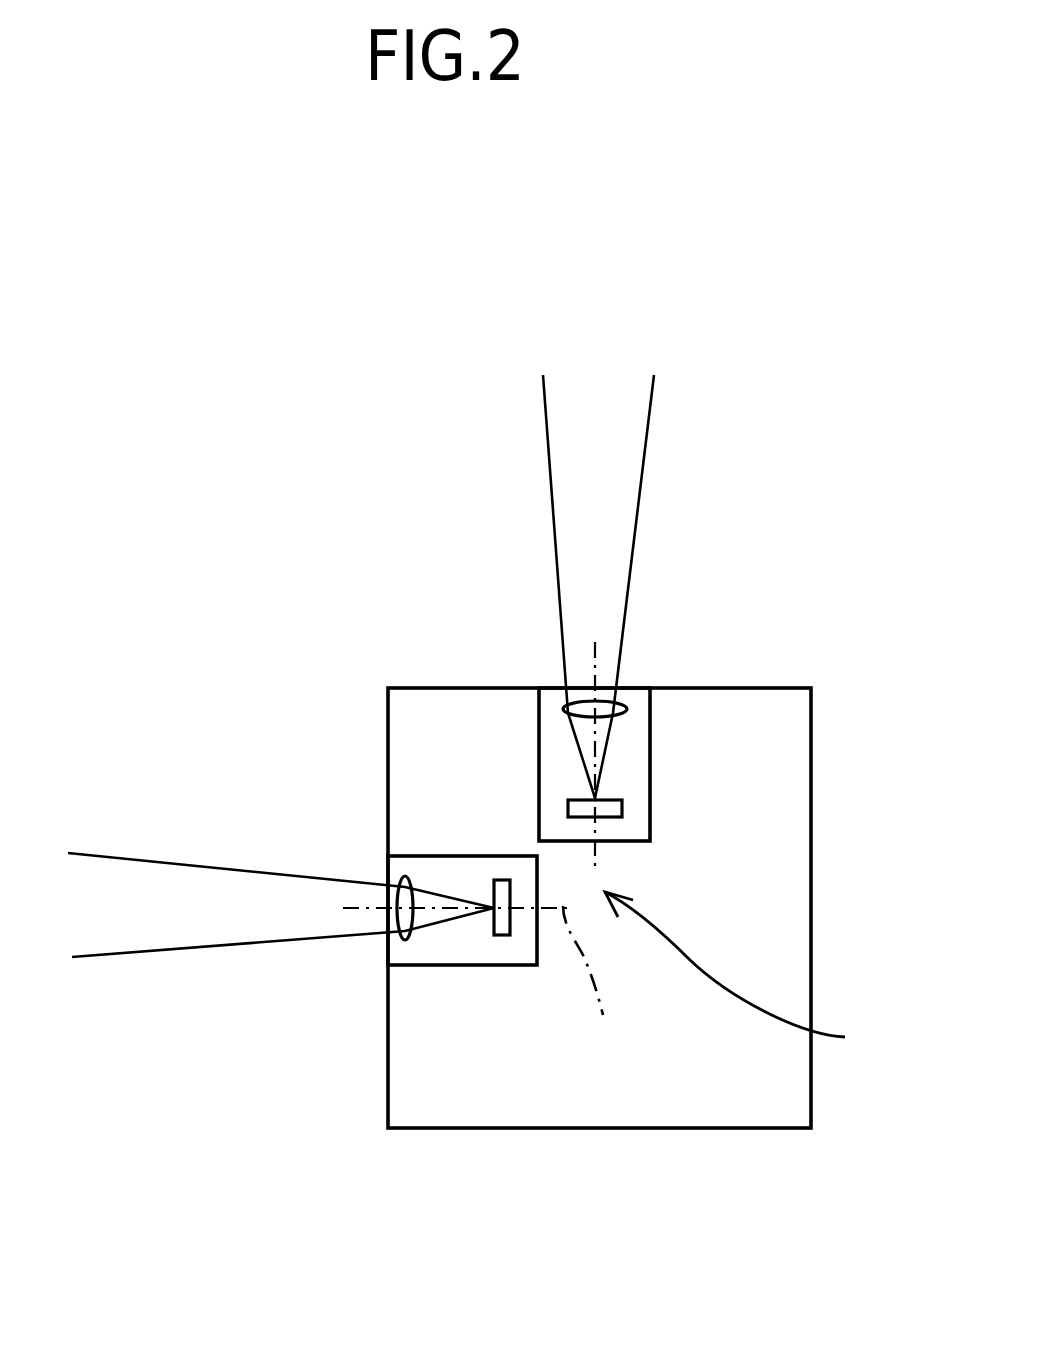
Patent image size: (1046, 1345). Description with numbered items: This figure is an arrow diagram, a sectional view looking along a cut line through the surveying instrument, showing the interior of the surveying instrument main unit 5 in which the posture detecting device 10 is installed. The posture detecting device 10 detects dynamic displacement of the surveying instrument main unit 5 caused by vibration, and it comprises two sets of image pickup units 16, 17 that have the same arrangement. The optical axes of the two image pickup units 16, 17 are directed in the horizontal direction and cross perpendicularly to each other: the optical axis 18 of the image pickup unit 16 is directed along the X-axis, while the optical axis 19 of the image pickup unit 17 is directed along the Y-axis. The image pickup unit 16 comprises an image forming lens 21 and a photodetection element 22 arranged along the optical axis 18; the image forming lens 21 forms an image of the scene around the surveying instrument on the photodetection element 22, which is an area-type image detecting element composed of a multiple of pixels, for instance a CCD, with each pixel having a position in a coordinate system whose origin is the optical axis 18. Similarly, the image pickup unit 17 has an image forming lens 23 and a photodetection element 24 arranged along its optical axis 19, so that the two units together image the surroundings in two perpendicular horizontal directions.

The surveying instrument main unit 5 is at (811, 960).
The posture detecting device 10 is at (751, 978).
The image pickup unit 16 is at (453, 965).
The image pickup unit 17 is at (650, 757).
The optical axis 18 is at (595, 994).
The optical axis 19 is at (598, 858).
The image forming lens 21 is at (408, 877).
The photodetection element 22 is at (503, 880).
The image forming lens 23 is at (563, 709).
The photodetection element 24 is at (567, 808).